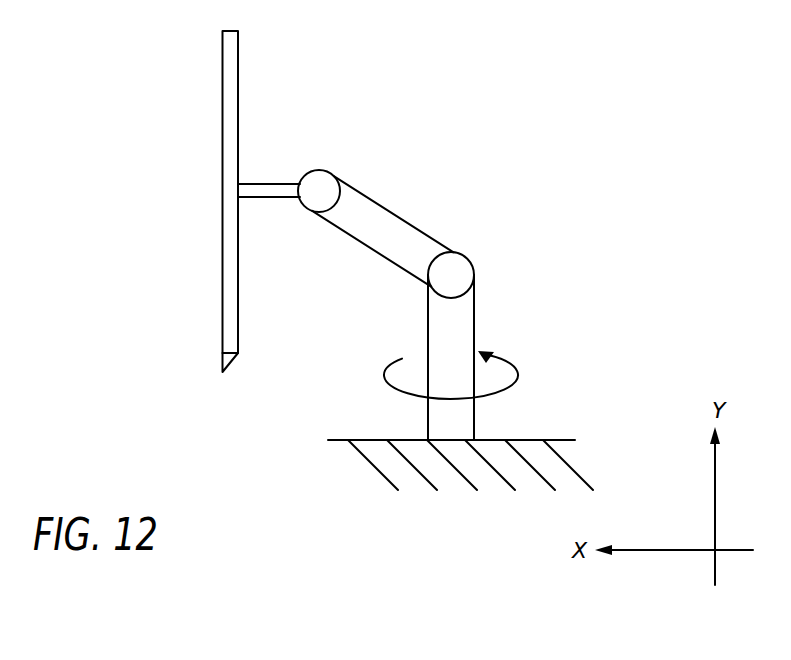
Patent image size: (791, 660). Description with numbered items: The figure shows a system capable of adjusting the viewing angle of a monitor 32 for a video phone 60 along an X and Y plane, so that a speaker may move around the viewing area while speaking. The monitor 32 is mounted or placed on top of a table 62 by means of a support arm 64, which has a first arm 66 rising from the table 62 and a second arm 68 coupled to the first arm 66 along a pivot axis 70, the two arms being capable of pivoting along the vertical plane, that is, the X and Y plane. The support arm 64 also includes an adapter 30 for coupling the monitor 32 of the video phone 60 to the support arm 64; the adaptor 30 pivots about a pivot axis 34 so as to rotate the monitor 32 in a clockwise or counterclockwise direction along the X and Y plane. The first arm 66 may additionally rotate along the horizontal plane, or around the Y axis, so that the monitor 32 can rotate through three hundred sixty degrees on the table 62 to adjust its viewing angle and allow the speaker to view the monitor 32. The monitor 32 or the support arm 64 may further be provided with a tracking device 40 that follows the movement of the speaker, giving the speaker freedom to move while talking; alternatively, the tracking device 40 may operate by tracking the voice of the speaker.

The adapter 30 is at (267, 185).
The monitor 32 is at (230, 30).
The pivot axis 34 is at (318, 192).
The tracking device 40 is at (231, 356).
The video phone 60 is at (201, 242).
The table 62 is at (445, 478).
The support arm 64 is at (457, 222).
The first arm 66 is at (462, 317).
The second arm 68 is at (391, 210).
The pivot axis 70 is at (448, 275).